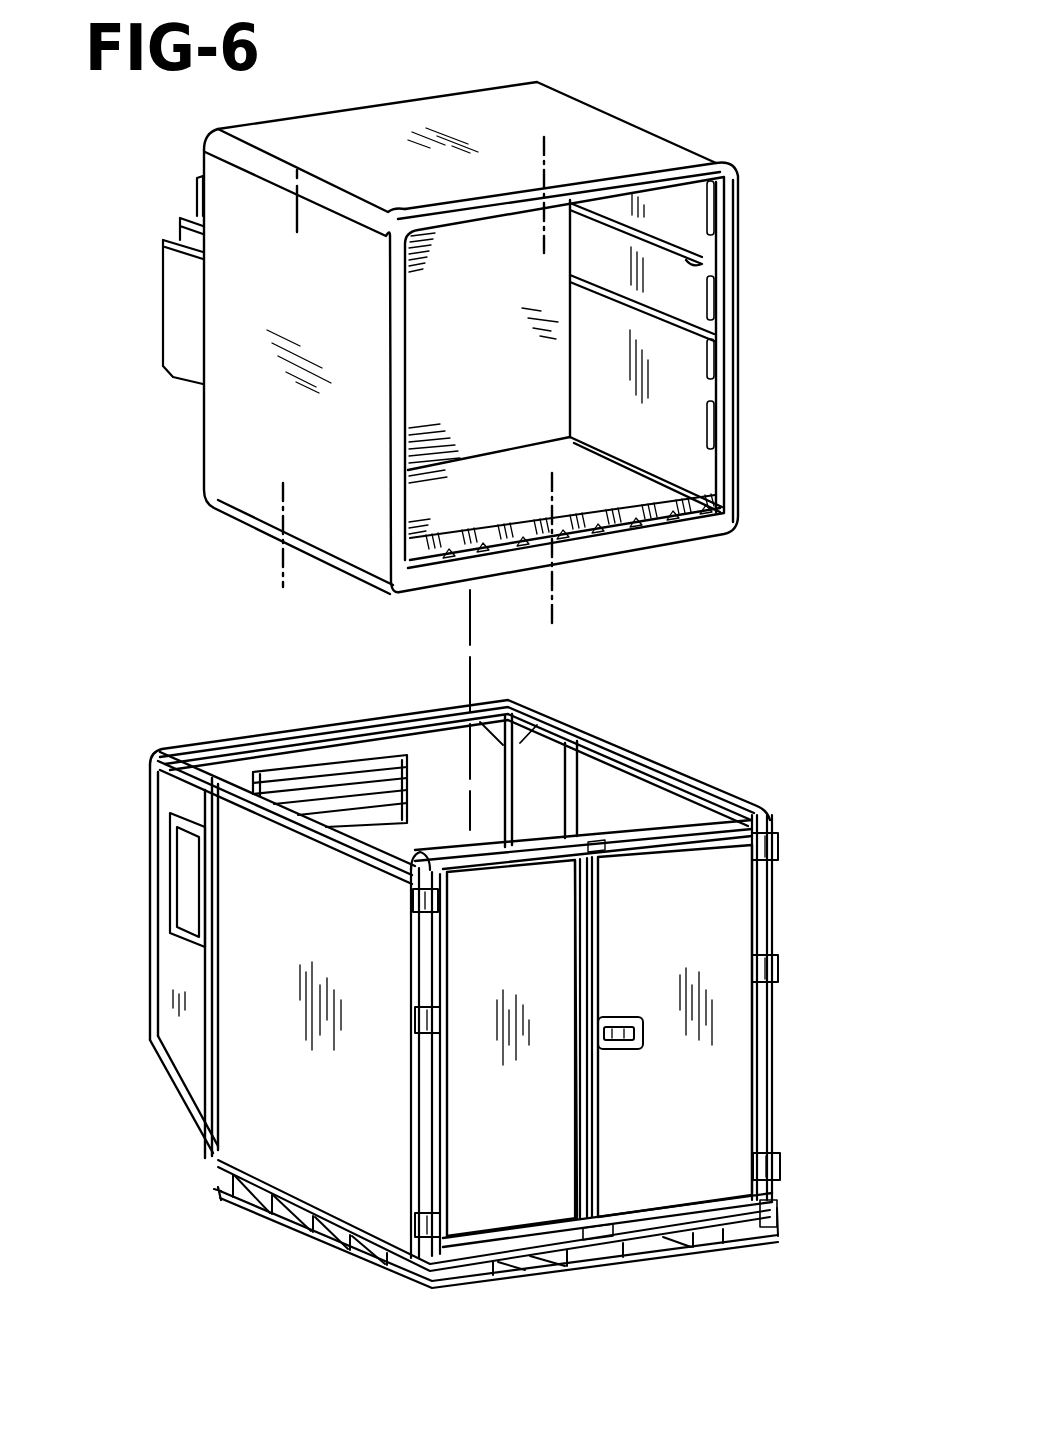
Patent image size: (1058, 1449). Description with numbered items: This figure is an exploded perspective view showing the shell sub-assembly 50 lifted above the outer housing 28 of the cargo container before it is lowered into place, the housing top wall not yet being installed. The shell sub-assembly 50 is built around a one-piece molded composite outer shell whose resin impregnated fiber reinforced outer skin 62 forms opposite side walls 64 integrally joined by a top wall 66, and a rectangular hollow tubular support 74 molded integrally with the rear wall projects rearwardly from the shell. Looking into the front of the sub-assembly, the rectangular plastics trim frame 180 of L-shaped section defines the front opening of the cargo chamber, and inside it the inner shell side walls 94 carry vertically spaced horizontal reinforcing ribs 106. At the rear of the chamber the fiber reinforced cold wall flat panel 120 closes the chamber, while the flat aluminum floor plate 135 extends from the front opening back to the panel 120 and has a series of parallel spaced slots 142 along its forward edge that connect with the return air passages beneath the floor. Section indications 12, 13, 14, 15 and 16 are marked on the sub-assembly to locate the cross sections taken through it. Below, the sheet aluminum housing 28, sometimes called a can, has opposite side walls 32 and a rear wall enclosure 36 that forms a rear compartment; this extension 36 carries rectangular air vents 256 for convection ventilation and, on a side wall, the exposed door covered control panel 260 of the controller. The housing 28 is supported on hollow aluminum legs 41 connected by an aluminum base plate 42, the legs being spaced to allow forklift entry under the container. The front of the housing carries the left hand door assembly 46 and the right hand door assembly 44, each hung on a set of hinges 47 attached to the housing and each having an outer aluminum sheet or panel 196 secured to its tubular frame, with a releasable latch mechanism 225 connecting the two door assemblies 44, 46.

The section line 12- 12 is at (295, 497).
The section line 13- 13 is at (556, 138).
The section line 14- 14 is at (562, 484).
The section line 15- 15 is at (700, 392).
The section line 16- 16 is at (343, 169).
The outer housing 28 is at (660, 760).
The side walls 32 is at (237, 1097).
The rear wall enclosure 36 is at (428, 742).
The supports or legs 41 is at (322, 1223).
The base plate 42 is at (353, 1253).
The door assembly 44 is at (725, 1067).
The door assembly 46 is at (468, 1084).
The hinges 47 is at (417, 1007).
The shell sub-assembly 50 is at (668, 126).
The outer skin 62 is at (203, 478).
The side walls 64 is at (218, 412).
The top wall 66 is at (597, 122).
The tubular support 74 is at (172, 310).
The side walls 94 is at (617, 416).
The reinforcing ribs 106 is at (683, 310).
The flat panel 120 is at (433, 389).
The floor panel or plate 135 is at (443, 502).
The slots 142 is at (671, 503).
The trim frame 180 is at (739, 208).
The outer aluminum sheet or panel 196 is at (730, 1130).
The latch mechanism 225 is at (623, 1017).
The air vents 256 is at (282, 765).
The control panel 260 is at (187, 863).